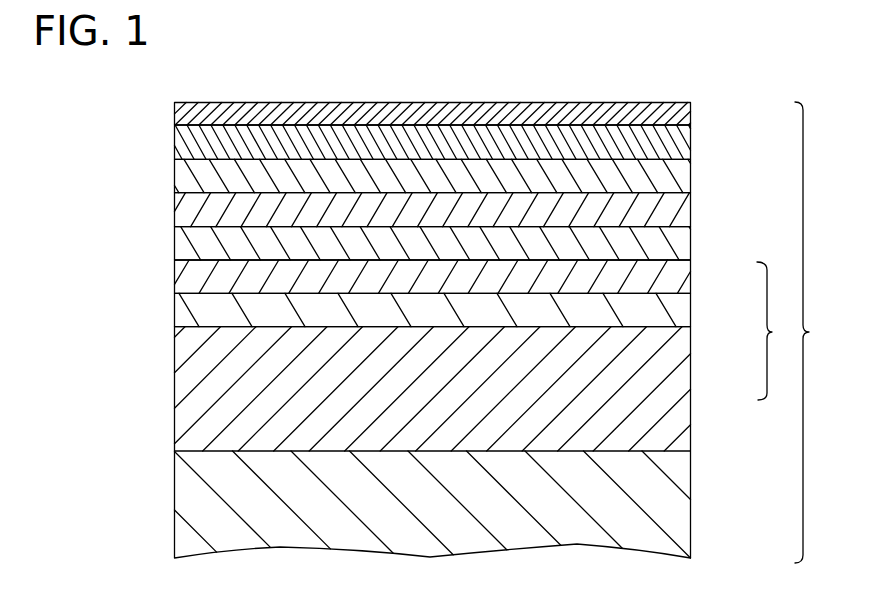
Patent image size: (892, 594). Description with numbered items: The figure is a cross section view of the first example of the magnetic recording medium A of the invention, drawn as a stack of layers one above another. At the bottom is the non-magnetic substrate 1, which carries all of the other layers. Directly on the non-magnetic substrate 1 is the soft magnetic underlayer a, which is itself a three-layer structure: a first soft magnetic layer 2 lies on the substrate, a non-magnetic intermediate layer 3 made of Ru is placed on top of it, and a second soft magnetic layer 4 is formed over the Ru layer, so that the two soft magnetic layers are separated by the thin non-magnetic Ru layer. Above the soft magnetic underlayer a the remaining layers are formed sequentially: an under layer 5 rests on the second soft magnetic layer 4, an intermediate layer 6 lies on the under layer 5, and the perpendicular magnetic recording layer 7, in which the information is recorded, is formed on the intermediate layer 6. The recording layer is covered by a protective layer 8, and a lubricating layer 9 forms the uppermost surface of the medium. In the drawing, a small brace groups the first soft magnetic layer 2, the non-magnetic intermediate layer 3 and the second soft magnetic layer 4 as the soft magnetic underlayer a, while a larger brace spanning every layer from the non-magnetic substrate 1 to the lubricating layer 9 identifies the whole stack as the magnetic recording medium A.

The non-magnetic substrate 1 is at (680, 495).
The first soft magnetic layer 2 is at (680, 387).
The non-magnetic intermediate layer 3 is at (680, 311).
The second soft magnetic layer 4 is at (680, 277).
The under layer 5 is at (680, 244).
The intermediate layer 6 is at (680, 211).
The perpendicular magnetic recording layer 7 is at (680, 178).
The protective layer 8 is at (680, 146).
The lubricating layer 9 is at (680, 114).
The soft magnetic underlayer a is at (773, 331).
The magnetic recording medium A is at (811, 332).